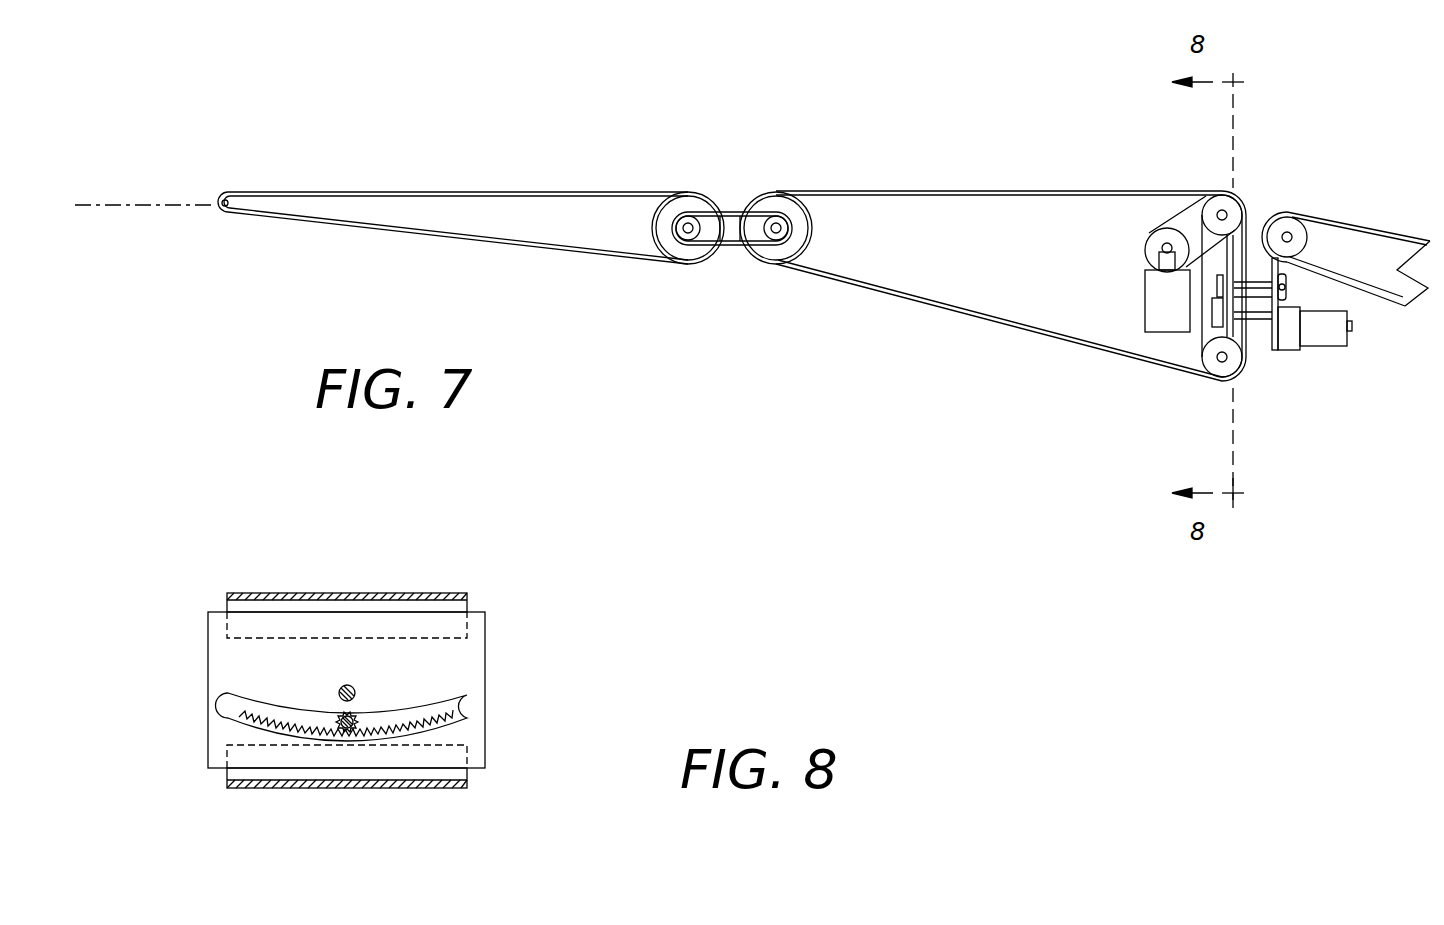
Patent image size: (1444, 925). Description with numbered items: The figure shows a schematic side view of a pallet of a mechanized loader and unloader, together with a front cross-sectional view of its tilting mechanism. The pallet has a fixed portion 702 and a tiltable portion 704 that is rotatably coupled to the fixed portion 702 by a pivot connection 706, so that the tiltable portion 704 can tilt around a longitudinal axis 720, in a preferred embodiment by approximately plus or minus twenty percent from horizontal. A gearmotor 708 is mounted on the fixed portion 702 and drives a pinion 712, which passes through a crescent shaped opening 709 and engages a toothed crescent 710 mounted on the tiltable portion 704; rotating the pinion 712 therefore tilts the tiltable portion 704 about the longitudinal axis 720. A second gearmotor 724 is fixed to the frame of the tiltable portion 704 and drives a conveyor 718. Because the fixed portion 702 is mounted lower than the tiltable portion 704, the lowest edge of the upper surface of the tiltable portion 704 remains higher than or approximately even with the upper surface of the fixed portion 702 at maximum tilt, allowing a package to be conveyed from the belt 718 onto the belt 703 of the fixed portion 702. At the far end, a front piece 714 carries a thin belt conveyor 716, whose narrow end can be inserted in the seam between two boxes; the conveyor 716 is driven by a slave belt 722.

In FIG. 7, the fixed portion 702 is at (1291, 232).
In FIG. 7, the belt 703 is at (1402, 217).
In FIG. 7, the tiltable portion 704 is at (1220, 198).
In FIG. 7, the pivot connection 706 is at (1286, 290).
In FIG. 8, the pivot connection 706 is at (355, 690).
In FIG. 7, the gearmotor 708 is at (1322, 346).
In FIG. 8, the crescent shaped opening 709 is at (452, 693).
In FIG. 8, the toothed crescent 710 is at (455, 722).
In FIG. 7, the pinion 712 is at (1258, 340).
In FIG. 8, the pinion 712 is at (340, 732).
In FIG. 7, the front piece 714 is at (684, 268).
In FIG. 7, the thin belt conveyor 716 is at (508, 192).
In FIG. 7, the conveyor 718 is at (226, 190).
In FIG. 7, the longitudinal axis 720 is at (150, 207).
In FIG. 7, the slave belt 722 is at (736, 212).
In FIG. 7, the gearmotor 724 is at (1160, 300).